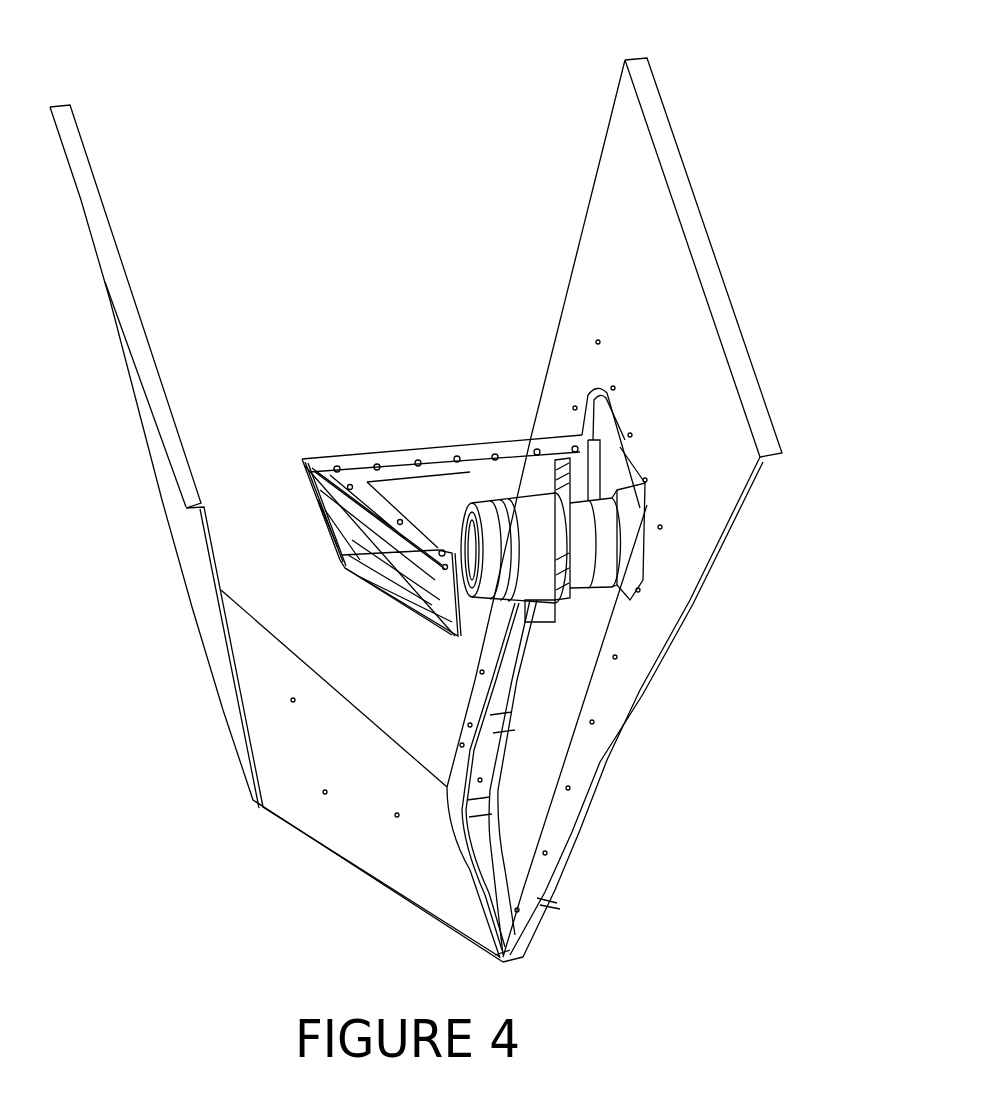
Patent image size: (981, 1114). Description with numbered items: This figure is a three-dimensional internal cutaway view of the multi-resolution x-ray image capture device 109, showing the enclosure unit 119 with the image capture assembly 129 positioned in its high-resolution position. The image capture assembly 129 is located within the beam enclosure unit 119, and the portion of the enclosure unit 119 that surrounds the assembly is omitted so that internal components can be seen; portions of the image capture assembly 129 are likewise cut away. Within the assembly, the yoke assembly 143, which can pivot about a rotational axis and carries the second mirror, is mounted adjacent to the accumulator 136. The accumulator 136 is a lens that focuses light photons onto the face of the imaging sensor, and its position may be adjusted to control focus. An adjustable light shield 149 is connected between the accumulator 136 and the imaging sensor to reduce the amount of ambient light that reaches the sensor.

The multi-resolution x-ray image capture device 109 is at (406, 62).
The beam enclosure unit 119 is at (160, 515).
The image capture assembly 129 is at (538, 692).
The accumulator 136 is at (540, 535).
The yoke assembly 143 is at (392, 450).
The adjustable light shield 149 is at (579, 592).